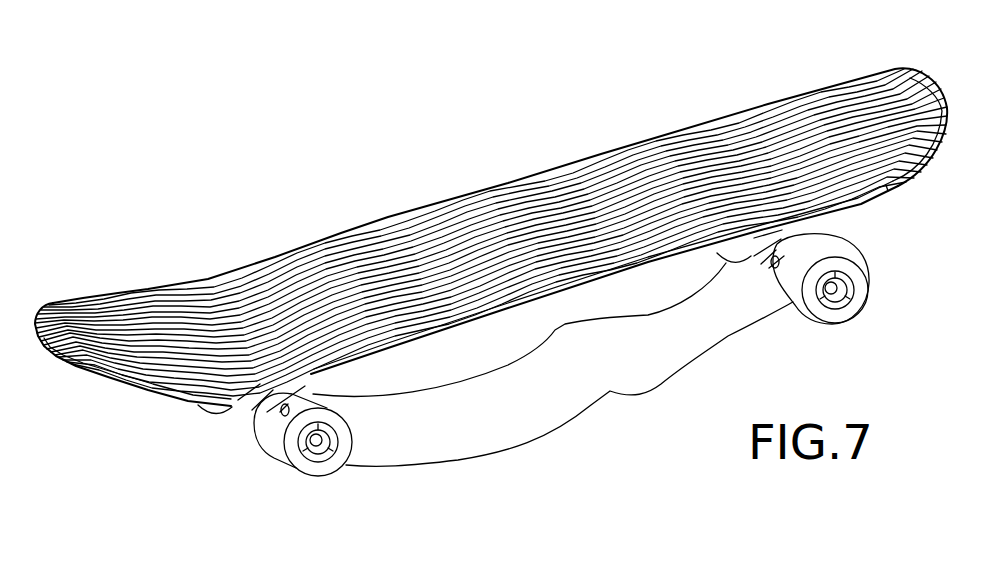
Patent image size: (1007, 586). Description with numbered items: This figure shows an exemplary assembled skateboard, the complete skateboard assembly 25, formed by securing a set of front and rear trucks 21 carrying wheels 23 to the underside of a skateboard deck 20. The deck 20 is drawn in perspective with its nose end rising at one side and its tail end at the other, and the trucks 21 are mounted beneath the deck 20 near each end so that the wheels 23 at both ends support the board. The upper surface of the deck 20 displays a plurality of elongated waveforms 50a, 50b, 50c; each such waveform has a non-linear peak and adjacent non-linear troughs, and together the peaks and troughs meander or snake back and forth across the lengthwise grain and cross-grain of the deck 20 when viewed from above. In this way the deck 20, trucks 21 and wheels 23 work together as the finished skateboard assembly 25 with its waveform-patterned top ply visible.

The skateboard assembly 25 is at (323, 150).
The skateboard deck 20 is at (494, 177).
The waveform 50a is at (643, 147).
The waveform 50b is at (676, 140).
The waveform 50c is at (718, 142).
The front and rear trucks 21 is at (557, 316).
The wheels 23 is at (602, 383).